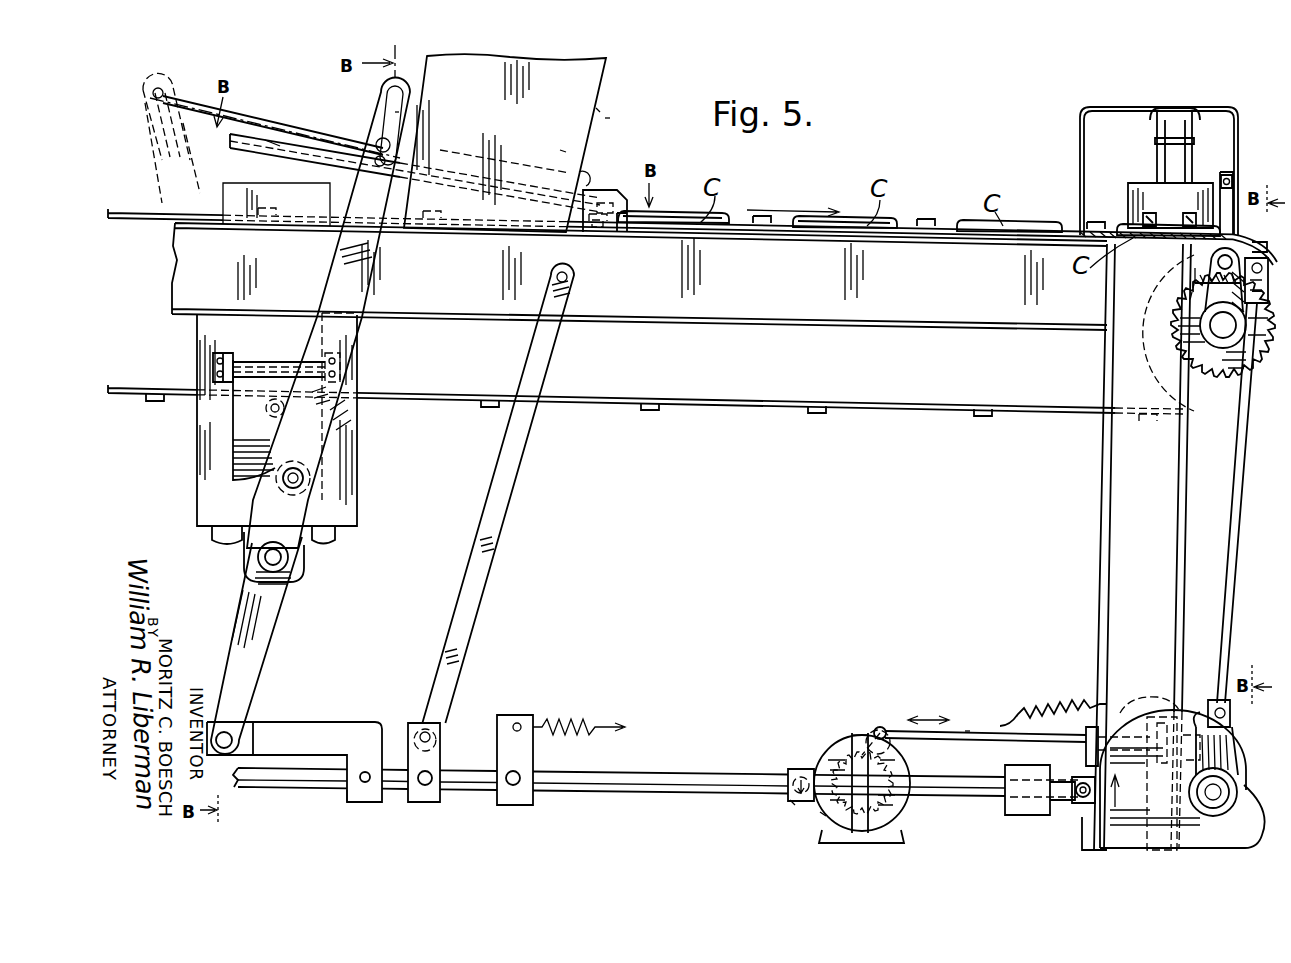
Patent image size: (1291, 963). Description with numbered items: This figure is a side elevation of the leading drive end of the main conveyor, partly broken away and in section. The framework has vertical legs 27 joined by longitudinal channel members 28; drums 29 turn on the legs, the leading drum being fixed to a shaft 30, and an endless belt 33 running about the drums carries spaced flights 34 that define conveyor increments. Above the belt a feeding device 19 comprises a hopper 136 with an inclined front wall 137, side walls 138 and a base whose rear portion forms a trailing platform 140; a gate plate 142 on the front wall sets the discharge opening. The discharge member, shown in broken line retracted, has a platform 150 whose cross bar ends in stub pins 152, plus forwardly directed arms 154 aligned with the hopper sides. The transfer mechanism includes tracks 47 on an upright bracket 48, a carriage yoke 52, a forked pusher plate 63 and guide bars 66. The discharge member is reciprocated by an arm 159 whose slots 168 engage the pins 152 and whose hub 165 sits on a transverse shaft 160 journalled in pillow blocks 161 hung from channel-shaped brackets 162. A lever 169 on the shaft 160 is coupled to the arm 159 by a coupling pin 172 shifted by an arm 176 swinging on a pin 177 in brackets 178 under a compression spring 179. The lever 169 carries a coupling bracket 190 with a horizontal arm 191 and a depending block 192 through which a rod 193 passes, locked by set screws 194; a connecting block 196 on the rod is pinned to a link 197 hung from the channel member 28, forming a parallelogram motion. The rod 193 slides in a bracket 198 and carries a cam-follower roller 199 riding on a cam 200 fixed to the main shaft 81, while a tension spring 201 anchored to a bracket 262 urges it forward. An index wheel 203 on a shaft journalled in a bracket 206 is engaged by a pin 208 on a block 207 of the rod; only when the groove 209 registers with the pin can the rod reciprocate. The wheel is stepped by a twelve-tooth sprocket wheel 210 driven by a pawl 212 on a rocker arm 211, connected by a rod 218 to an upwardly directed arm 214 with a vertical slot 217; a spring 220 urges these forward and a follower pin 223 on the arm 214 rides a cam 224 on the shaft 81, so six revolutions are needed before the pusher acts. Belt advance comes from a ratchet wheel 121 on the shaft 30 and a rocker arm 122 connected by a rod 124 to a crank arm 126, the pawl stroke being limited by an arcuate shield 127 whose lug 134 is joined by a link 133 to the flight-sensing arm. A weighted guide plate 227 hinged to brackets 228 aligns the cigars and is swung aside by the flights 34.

The feeding device 19 is at (650, 80).
The vertical legs 27 is at (1133, 528).
The structural channel members 28 is at (300, 202).
The drums 29 is at (1230, 403).
The shaft 30 is at (1222, 332).
The endless flexible belt 33 is at (152, 218).
The flights 34 is at (266, 208).
The tracks 47 is at (1197, 118).
The forward upright bracket 48 is at (1090, 107).
The depending yoke 52 is at (1163, 163).
The forked pusher plate 63 is at (1133, 193).
The guide bars 66 is at (1190, 220).
The main shaft 81 is at (1238, 770).
The ratchet wheel 121 is at (1190, 340).
The rocker arm 122 is at (1192, 292).
The rod 124 is at (1240, 537).
The crank arm 126 is at (1198, 725).
The arcuate shield member 127 is at (1200, 272).
The link 133 is at (1270, 258).
The lug 134 is at (1210, 262).
The storage hopper 136 is at (617, 123).
The front wall 137 is at (596, 110).
The side walls 138 is at (562, 150).
The trailing platform 140 is at (273, 137).
The gate plate 142 is at (583, 172).
The platform 150 is at (257, 127).
The stub pins 152 is at (162, 91).
The forwardly directed arms 154 is at (603, 200).
The arm 159 is at (150, 88).
The transverse shaft 160 is at (290, 560).
The pillow blocks 161 is at (243, 557).
The channel-shaped brackets 162 is at (345, 483).
The hub 165 is at (263, 582).
The slots 168 is at (392, 108).
The lever 169 is at (257, 645).
The coupling pin 172 is at (313, 480).
The arm 176 is at (243, 435).
The pin 177 is at (285, 340).
The brackets 178 is at (213, 368).
The helical compression spring 179 is at (266, 408).
The coupling bracket 190 is at (316, 713).
The horizontal arm 191 is at (338, 727).
The depending block 192 is at (367, 800).
The rod 193 is at (675, 780).
The set screws 194 is at (360, 780).
The connecting block 196 is at (438, 750).
The link 197 is at (477, 595).
The bracket 198 is at (1050, 817).
The cam-follower roller 199 is at (1070, 817).
The cam 200 is at (1080, 768).
The helical tension spring 201 is at (578, 720).
The index wheel 203 is at (818, 749).
The bracket 206 is at (903, 830).
The block 207 is at (790, 768).
The pin 208 is at (787, 805).
The groove 209 is at (856, 733).
The sprocket wheel 210 is at (824, 812).
The rocker arm 211 is at (905, 740).
The pawl member 212 is at (880, 727).
The upwardly directed arm 214 is at (1210, 700).
The vertical slot 217 is at (1090, 720).
The connecting rod 218 is at (967, 731).
The helical tension spring 220 is at (1043, 696).
The cam follower pin 223 is at (1153, 813).
The cam 224 is at (1253, 815).
The guide plate 227 is at (1233, 198).
The brackets 228 is at (1232, 172).
The bracket 262 is at (523, 758).